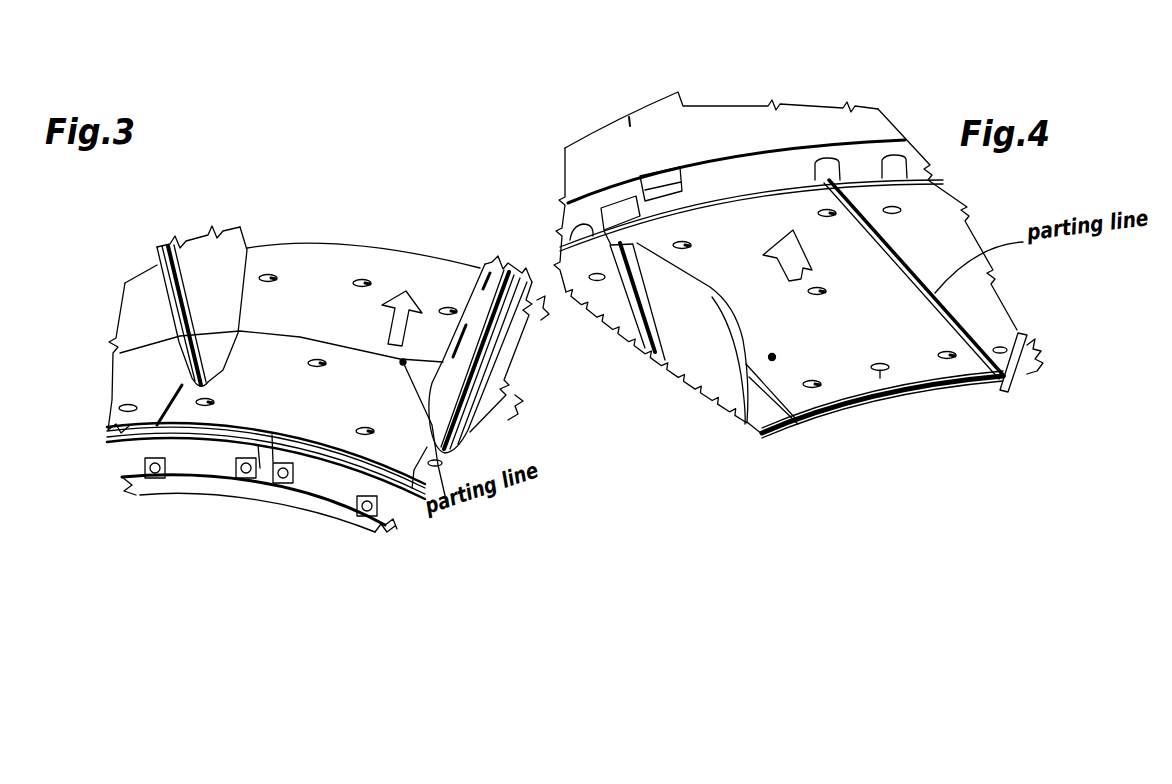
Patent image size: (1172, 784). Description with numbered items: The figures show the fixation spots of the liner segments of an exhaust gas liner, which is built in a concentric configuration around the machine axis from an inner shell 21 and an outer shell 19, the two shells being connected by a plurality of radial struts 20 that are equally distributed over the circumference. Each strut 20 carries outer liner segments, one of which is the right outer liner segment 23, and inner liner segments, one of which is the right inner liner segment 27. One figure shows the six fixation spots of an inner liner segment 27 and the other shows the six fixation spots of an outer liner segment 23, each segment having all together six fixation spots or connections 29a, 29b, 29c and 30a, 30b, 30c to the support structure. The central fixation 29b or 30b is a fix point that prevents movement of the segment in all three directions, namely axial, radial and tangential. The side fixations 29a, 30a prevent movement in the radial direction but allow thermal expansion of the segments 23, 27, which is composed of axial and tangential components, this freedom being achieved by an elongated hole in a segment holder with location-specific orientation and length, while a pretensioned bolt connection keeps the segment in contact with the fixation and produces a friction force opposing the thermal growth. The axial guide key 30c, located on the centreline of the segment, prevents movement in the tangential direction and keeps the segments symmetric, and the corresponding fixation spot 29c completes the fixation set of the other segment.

In FIG. 4, the outer shell 19 is at (858, 179).
In FIG. 3, the radial strut 20 is at (198, 247).
In FIG. 4, the radial strut 20 is at (690, 320).
In FIG. 3, the inner shell 21 is at (362, 466).
In FIG. 4, the right outer liner segment 23 is at (772, 358).
In FIG. 3, the right inner liner segment 27 is at (320, 268).
In FIG. 4, the side fixation 29a is at (945, 353).
In FIG. 4, the central fixation 29b is at (821, 296).
In FIG. 4, the axial guide key 29c is at (885, 405).
In FIG. 3, the side fixation 30a is at (446, 314).
In FIG. 3, the central fixation 30b is at (318, 360).
In FIG. 3, the axial guide key 30c is at (366, 282).